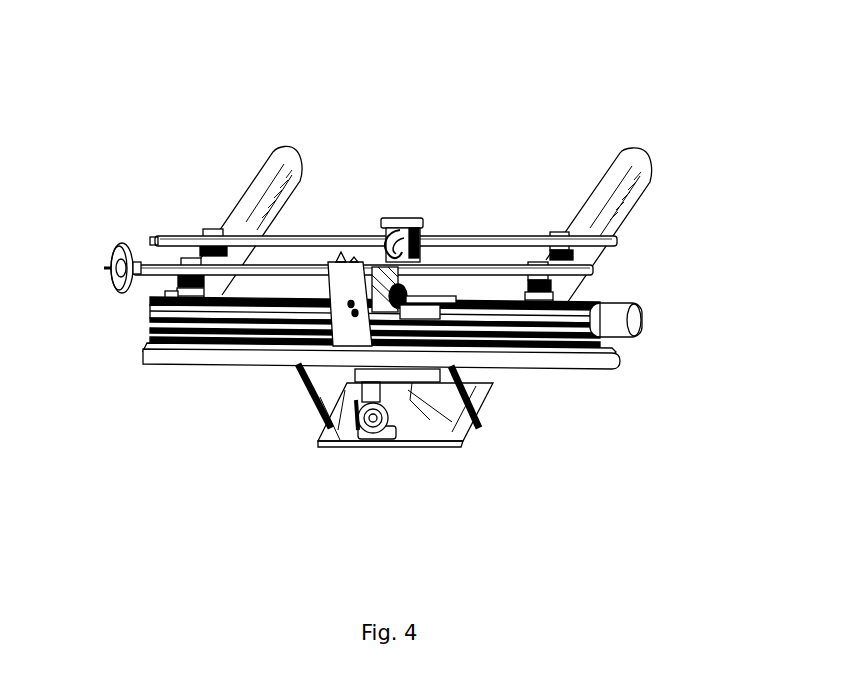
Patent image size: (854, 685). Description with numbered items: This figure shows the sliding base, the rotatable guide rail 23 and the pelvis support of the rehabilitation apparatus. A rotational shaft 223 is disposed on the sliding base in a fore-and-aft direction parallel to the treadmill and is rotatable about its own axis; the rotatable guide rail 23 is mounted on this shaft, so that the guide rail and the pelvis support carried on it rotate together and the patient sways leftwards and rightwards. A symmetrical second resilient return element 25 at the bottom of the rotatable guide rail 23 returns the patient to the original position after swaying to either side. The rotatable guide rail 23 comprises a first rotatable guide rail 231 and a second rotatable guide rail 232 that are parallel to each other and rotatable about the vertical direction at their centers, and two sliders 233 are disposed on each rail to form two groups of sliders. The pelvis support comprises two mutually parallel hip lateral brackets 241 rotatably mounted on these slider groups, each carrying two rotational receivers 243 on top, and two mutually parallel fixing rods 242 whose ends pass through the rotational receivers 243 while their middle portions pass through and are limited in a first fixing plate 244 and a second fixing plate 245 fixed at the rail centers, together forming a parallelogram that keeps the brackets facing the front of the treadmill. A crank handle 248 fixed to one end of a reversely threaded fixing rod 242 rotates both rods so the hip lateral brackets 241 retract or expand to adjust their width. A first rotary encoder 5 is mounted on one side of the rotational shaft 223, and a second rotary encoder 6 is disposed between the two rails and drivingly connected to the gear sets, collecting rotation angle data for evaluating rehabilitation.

The first rotary encoder 5 is at (377, 427).
The second rotary encoder 6 is at (506, 414).
The rotatable guide rail 23 is at (738, 318).
The second resilient return element 25 is at (312, 403).
The rotational shaft 223 is at (432, 443).
The first rotatable guide rail 231 is at (641, 322).
The second rotatable guide rail 232 is at (614, 346).
The slider 233 is at (616, 352).
The hip lateral bracket 241 is at (630, 153).
The fixing rod 242 is at (617, 242).
The rotational receiver 243 is at (213, 236).
The first fixing plate 244 is at (345, 268).
The second fixing plate 245 is at (412, 218).
The crank handle 248 is at (113, 286).